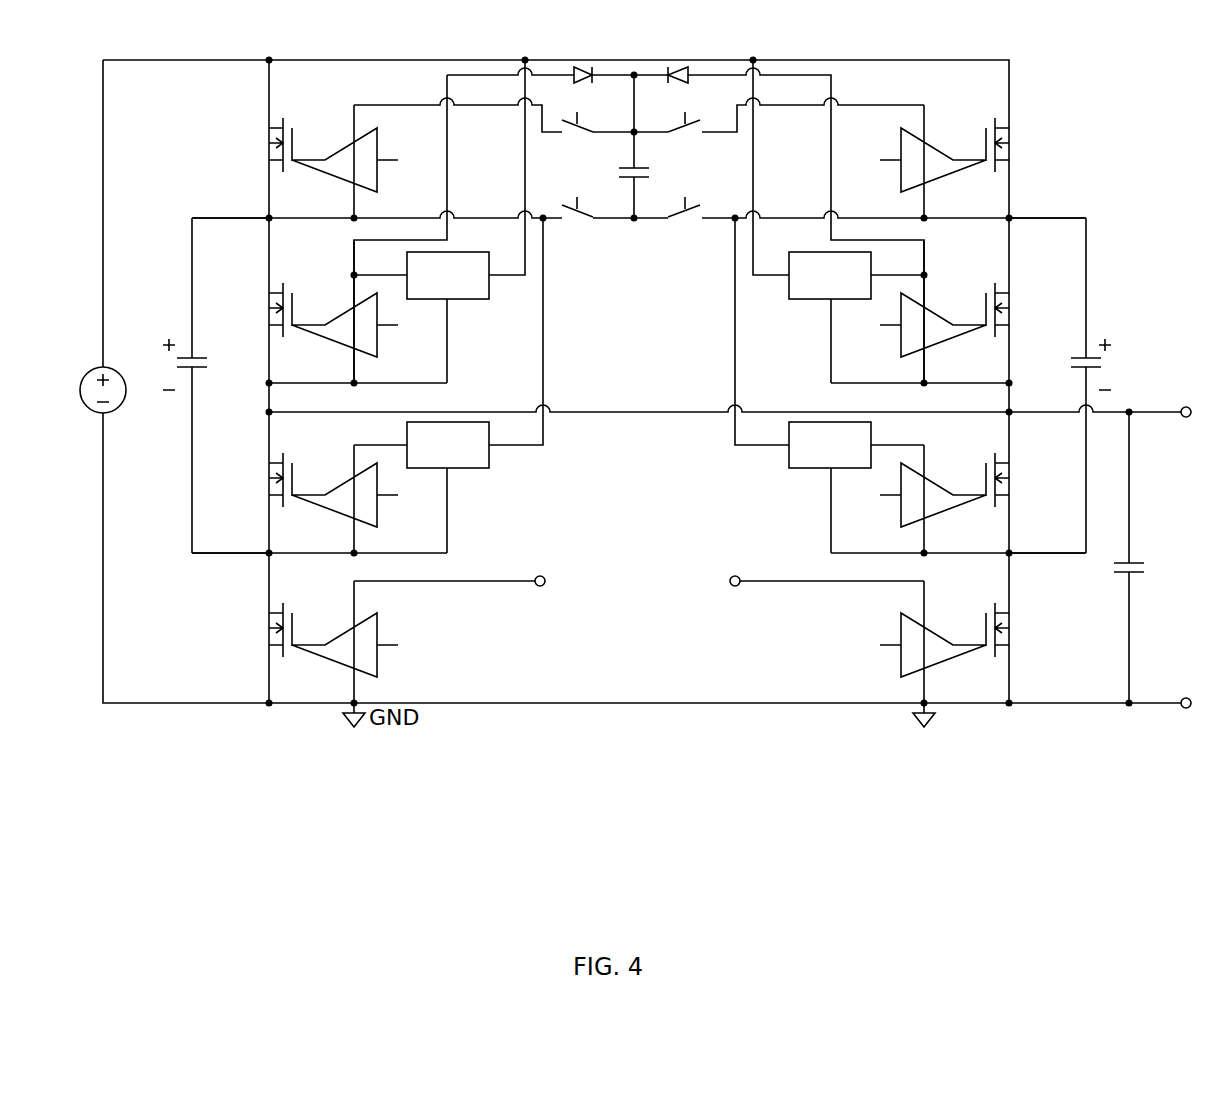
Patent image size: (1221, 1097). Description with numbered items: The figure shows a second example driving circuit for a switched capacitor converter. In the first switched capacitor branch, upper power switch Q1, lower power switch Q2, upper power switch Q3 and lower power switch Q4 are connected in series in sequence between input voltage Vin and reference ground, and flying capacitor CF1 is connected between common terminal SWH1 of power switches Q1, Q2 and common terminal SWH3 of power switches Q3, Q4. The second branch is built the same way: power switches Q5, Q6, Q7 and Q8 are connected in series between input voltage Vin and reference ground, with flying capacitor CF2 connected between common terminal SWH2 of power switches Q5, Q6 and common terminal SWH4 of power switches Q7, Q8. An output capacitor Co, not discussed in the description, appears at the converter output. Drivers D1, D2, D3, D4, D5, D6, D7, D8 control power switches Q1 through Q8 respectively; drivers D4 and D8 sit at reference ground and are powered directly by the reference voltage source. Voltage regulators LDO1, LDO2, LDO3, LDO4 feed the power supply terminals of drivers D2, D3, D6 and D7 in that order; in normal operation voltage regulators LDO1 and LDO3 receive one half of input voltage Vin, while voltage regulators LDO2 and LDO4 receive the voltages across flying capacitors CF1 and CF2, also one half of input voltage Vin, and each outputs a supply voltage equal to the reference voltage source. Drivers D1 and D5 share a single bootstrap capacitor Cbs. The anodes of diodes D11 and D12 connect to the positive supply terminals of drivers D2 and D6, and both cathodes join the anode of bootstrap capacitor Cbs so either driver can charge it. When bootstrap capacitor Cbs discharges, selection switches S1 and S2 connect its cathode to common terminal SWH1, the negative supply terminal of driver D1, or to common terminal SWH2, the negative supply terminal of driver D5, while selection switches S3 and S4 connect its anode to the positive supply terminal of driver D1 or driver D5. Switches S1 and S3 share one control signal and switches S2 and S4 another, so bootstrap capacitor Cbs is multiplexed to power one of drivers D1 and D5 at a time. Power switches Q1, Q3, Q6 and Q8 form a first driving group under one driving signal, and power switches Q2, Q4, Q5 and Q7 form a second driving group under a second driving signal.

The upper power switch Q1 is at (262, 145).
The lower power switch Q2 is at (262, 310).
The upper power switch Q3 is at (262, 480).
The lower power switch Q4 is at (262, 630).
The upper power switch Q5 is at (1016, 145).
The lower power switch Q6 is at (1016, 310).
The upper power switch Q7 is at (1016, 480).
The lower power switch Q8 is at (1016, 630).
The driver D1 is at (359, 161).
The driver D2 is at (359, 311).
The driver D3 is at (359, 499).
The driver D4 is at (436, 636).
The driver D5 is at (921, 161).
The driver D6 is at (921, 311).
The driver D7 is at (921, 499).
The driver D8 is at (840, 636).
The diode D11 is at (603, 87).
The diode D12 is at (662, 87).
The voltage regulator LDO1 is at (421, 317).
The voltage regulator LDO2 is at (421, 487).
The voltage regulator LDO3 is at (856, 317).
The voltage regulator LDO4 is at (856, 487).
The switch S1 is at (577, 211).
The switch S2 is at (685, 211).
The switch S3 is at (577, 128).
The switch S4 is at (686, 127).
The bootstrap capacitor Cbs is at (645, 146).
The flying capacitor CF1 is at (185, 385).
The flying capacitor CF2 is at (1093, 385).
The output capacitor Co is at (1145, 557).
The input voltage Vin is at (107, 409).
The common terminal SWH1 is at (230, 204).
The common terminal SWH2 is at (1047, 204).
The common terminal SWH3 is at (230, 568).
The common terminal SWH4 is at (1047, 568).